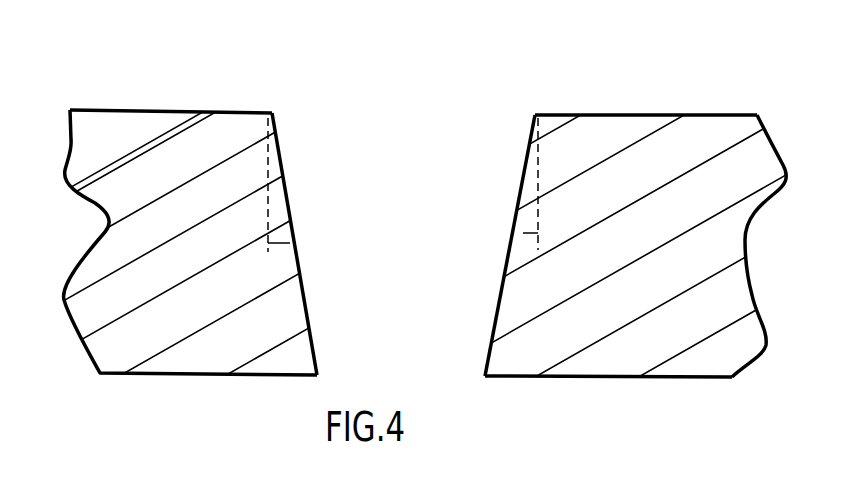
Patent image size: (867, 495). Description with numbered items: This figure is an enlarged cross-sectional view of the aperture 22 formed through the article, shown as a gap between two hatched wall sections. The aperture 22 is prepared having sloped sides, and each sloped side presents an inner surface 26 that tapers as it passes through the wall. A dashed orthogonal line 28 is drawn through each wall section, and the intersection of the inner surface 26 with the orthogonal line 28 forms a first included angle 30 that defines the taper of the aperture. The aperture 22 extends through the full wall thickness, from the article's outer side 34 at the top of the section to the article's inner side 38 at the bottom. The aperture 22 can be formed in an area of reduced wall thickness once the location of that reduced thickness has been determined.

The aperture 22 is at (410, 132).
The inner surface 26 is at (495, 320).
The orthogonal line 28 is at (538, 233).
The first included angle 30 is at (538, 175).
The outer side 34 is at (598, 113).
The inner side 38 is at (527, 378).